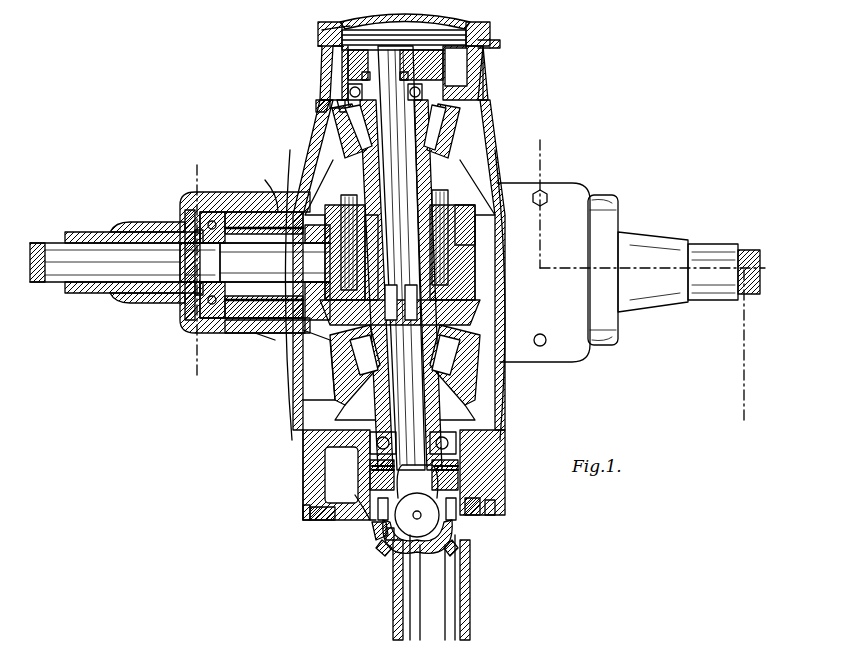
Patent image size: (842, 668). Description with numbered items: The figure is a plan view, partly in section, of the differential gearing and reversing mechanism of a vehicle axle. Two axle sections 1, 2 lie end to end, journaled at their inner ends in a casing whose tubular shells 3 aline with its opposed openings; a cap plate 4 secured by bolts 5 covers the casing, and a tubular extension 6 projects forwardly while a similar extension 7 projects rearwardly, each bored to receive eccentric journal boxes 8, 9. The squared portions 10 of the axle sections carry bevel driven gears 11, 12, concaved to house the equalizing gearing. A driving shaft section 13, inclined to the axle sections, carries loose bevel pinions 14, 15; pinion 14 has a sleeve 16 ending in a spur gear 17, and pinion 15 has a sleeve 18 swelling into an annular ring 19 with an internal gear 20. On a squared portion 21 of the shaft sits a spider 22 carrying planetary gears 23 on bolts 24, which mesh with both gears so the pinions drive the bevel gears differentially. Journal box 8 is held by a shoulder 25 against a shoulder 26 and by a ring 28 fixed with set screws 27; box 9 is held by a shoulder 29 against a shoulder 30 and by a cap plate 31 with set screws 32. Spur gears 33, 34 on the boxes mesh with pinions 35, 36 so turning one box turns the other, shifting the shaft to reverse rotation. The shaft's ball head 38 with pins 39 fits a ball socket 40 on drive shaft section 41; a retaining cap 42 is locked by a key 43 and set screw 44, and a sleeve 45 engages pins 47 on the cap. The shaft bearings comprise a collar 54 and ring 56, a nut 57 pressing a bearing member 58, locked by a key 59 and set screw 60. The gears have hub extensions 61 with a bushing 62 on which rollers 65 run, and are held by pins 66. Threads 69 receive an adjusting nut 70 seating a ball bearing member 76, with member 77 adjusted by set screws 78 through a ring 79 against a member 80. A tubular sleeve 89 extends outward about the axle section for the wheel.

The axle section 1 is at (42, 243).
The axle section 2 is at (745, 250).
The tubular shell 3 is at (602, 205).
The cap plate 4 is at (565, 349).
The bolt 5 is at (542, 346).
The tubular extension 6 is at (305, 478).
The tubular extension 7 is at (335, 95).
The journal box 8 is at (370, 524).
The journal box 9 is at (322, 52).
The squared portion 10 is at (268, 333).
The bevel driven gear 11 is at (335, 365).
The bevel driven gear 12 is at (470, 370).
The driving shaft section 13 is at (435, 405).
The bevel pinion 14 is at (340, 126).
The bevel pinion 15 is at (315, 430).
The sleeve 16 is at (372, 192).
The spur gear 17 is at (438, 215).
The sleeve 18 is at (355, 365).
The annular ring 19 is at (312, 322).
The internal gear 20 is at (480, 248).
The squared portion 21 is at (455, 305).
The spider 22 is at (470, 280).
The planetary gear 23 is at (470, 215).
The bolt 24 is at (360, 218).
The shoulder 25 is at (312, 215).
The shoulder 26 is at (486, 461).
The set screw 27 is at (310, 512).
The ring 28 is at (318, 520).
The shoulder 29 is at (483, 103).
The shoulder 30 is at (316, 103).
The cap plate 31 is at (318, 31).
The set screw 32 is at (500, 44).
The spur gear 33 is at (401, 258).
The spur gear 34 is at (340, 106).
The pinion 35 is at (450, 440).
The pinion 36 is at (492, 100).
The ball head 38 is at (468, 490).
The pin 39 is at (470, 508).
The ball socket 40 is at (445, 553).
The drive shaft section 41 is at (430, 601).
The retaining cap 42 is at (452, 530).
The key 43 is at (378, 538).
The set screw 44 is at (388, 543).
The sleeve 45 is at (470, 580).
The pin 47 is at (458, 543).
The collar 54 is at (336, 80).
The ring 56 is at (425, 90).
The nut 57 is at (430, 38).
The bearing member 58 is at (388, 30).
The key 59 is at (342, 55).
The set screw 60 is at (322, 18).
The hub extension 61 is at (255, 333).
The bushing 62 is at (235, 333).
The roller 65 is at (292, 212).
The pin 66 is at (300, 248).
The screw-threaded portion 69 is at (196, 322).
The adjusting nut 70 is at (190, 310).
The ball bearing member 76 is at (190, 300).
The bearing member 77 is at (195, 262).
The set screw 78 is at (205, 197).
The ring 79 is at (188, 230).
The member 80 is at (175, 226).
The tubular sleeve 89 is at (105, 232).